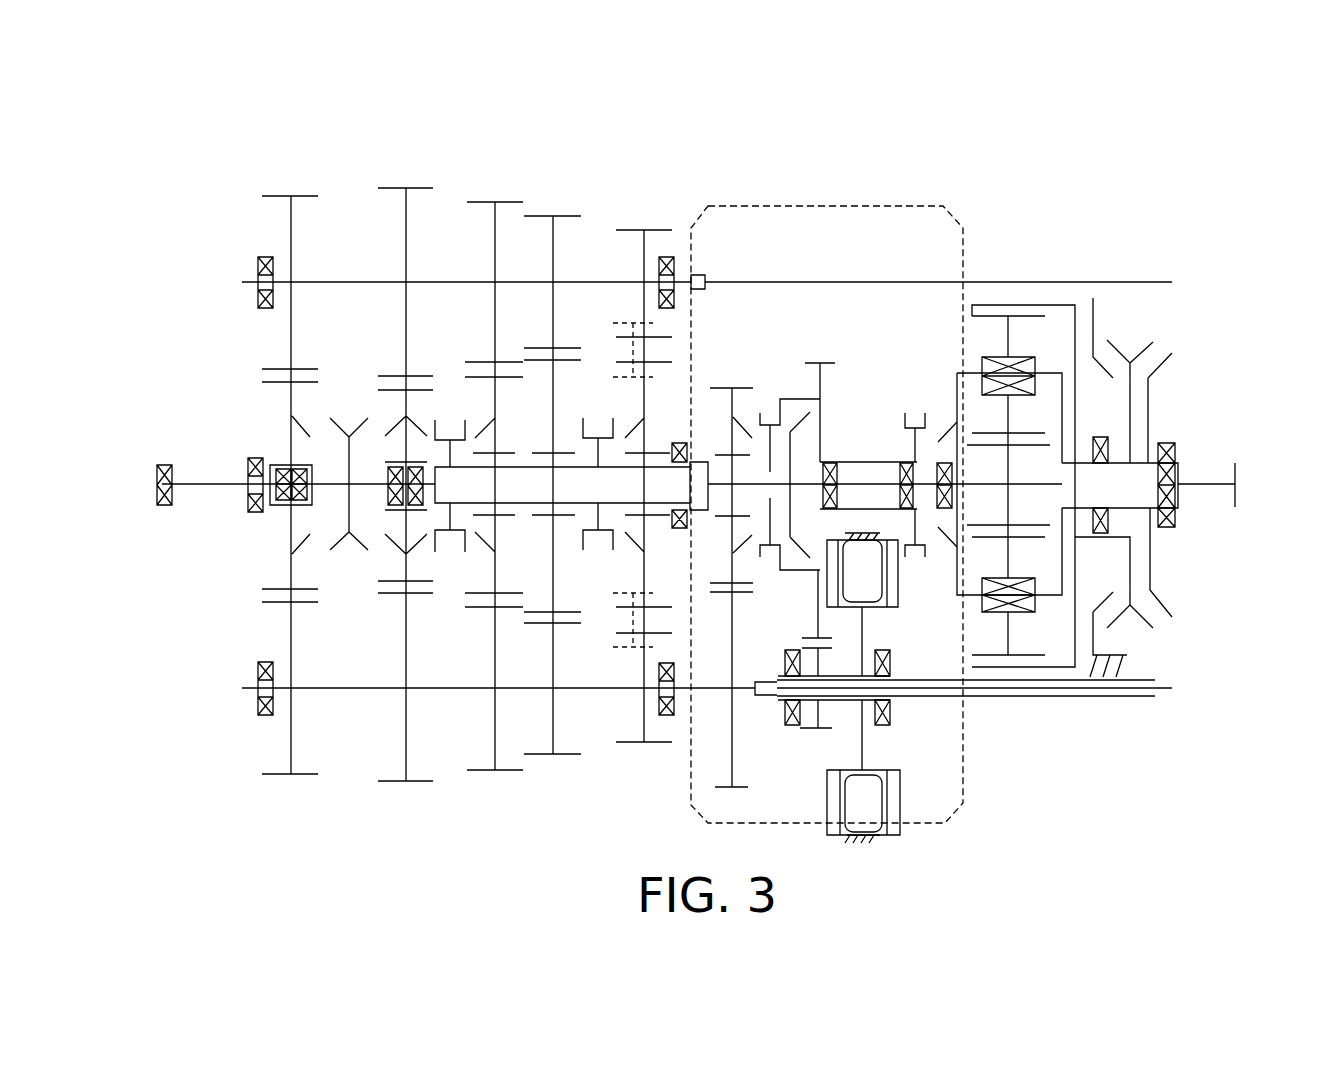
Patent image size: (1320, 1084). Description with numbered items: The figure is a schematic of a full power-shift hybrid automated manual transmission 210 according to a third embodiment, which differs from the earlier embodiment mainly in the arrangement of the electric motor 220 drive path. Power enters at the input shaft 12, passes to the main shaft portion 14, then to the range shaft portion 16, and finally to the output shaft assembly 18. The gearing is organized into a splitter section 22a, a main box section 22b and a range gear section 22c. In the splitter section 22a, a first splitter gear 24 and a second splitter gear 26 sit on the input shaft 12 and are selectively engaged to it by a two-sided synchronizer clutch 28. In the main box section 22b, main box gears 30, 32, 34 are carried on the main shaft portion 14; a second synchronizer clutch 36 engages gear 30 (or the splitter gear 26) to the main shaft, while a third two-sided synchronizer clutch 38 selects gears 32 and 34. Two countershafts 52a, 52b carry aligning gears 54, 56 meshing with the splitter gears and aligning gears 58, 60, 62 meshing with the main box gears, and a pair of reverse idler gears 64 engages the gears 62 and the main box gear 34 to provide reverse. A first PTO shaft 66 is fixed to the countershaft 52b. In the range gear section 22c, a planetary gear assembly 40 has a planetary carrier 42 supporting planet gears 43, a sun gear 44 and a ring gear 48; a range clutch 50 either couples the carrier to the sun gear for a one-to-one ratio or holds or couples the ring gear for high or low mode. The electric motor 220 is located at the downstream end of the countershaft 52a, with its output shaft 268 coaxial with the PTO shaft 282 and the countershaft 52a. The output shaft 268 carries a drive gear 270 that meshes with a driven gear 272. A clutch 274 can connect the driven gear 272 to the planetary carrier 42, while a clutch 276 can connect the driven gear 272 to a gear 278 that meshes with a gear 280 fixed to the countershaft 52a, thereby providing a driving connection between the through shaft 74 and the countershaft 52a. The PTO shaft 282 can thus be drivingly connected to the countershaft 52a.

The input shaft 12 is at (215, 486).
The main shaft portion 14 is at (522, 467).
The range shaft portion 16 is at (1067, 488).
The output shaft assembly 18 is at (1198, 482).
The splitter section 22a is at (433, 146).
The main box section 22b is at (672, 146).
The range gear section 22c is at (963, 146).
The first splitter gear 24 is at (302, 382).
The second splitter gear 26 is at (418, 390).
The two-sided synchronizer clutch 28 is at (349, 565).
The main box gear 30 is at (503, 362).
The main box gear 32 is at (560, 348).
The main box gear 34 is at (668, 362).
The second synchronizer clutch 36 is at (448, 568).
The third two-sided synchronizer clutch 38 is at (598, 568).
The planetary gear assembly 40 is at (1049, 250).
The planetary carrier 42 is at (975, 598).
The planet gears 43 is at (983, 315).
The sun gear 44 is at (1015, 447).
The ring gear 48 is at (1055, 305).
The range clutch 50 is at (1141, 338).
The countershaft 52a is at (325, 688).
The countershaft 52b is at (373, 282).
The aligning gear 54 is at (302, 196).
The aligning gear 56 is at (390, 188).
The aligning gear 58 is at (503, 202).
The aligning gear 60 is at (567, 216).
The aligning gear 62 is at (633, 230).
The reverse idler gears 64 is at (625, 380).
The first PTO shaft 66 is at (1150, 282).
The through shaft 74 is at (622, 690).
The hybrid transmission 210 is at (801, 178).
The electric motor 220 is at (869, 846).
The output shaft 268 is at (852, 702).
The drive gear 270 is at (805, 732).
The driven gear 272 is at (832, 363).
The clutch 274 is at (918, 404).
The clutch 276 is at (770, 394).
The gear 278 is at (722, 388).
The gear 280 is at (723, 787).
The PTO shaft 282 is at (1015, 690).